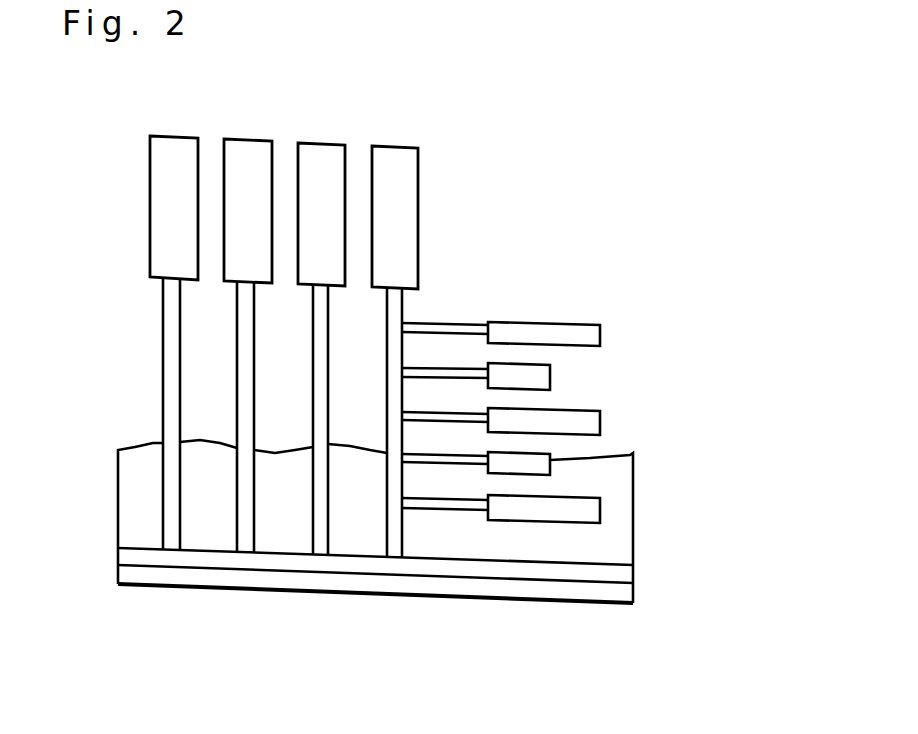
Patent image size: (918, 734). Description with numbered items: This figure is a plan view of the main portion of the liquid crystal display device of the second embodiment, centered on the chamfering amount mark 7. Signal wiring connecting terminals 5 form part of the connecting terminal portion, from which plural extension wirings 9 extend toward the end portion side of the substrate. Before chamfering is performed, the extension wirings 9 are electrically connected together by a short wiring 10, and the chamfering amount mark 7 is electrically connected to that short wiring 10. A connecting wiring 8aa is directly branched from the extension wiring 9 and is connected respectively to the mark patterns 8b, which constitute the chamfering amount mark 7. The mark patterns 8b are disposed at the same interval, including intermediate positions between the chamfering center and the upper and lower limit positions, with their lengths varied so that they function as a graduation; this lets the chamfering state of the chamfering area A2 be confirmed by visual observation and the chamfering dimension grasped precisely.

The signal wiring connecting terminal 5 is at (403, 209).
The chamfering amount mark 7 is at (599, 389).
The connecting wiring 8aa is at (448, 324).
The mark pattern 8b is at (564, 429).
The extension wiring 9 is at (167, 420).
The short wiring 10 is at (455, 568).
The chamfering area A2 is at (615, 525).